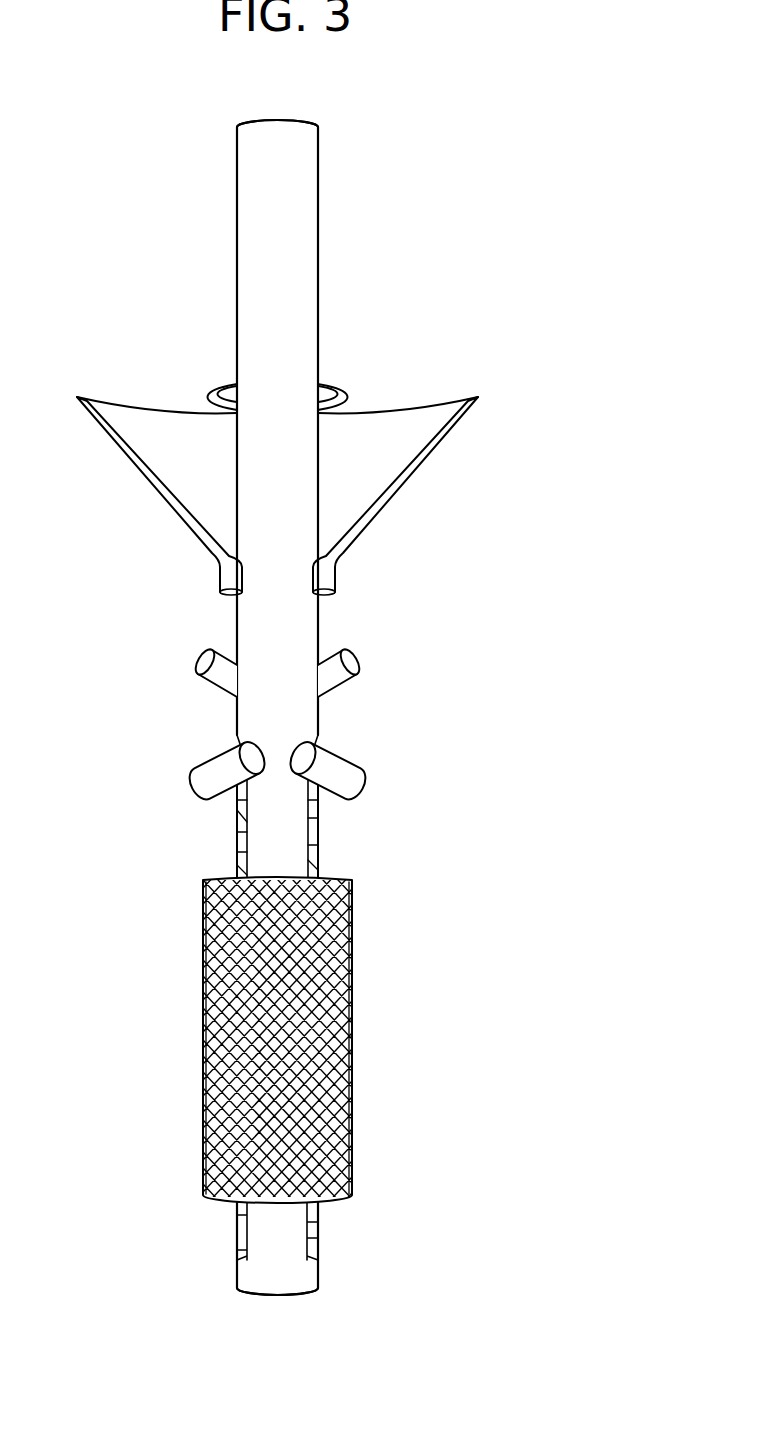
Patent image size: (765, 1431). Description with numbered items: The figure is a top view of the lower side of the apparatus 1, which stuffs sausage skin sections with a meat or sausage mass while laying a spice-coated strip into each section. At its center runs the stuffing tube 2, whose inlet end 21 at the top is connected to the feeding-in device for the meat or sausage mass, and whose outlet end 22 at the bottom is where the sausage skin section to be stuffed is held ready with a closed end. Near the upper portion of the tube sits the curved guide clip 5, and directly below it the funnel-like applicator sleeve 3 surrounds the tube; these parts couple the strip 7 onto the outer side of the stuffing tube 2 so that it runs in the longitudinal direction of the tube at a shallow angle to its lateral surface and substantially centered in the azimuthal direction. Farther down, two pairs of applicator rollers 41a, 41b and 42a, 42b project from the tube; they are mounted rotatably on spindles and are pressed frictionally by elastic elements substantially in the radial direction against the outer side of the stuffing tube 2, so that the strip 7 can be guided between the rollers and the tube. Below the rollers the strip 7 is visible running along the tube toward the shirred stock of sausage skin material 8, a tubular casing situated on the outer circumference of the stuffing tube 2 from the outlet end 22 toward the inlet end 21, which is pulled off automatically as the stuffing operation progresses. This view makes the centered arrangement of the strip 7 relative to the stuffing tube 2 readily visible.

The apparatus 1 is at (507, 462).
The stuffing tube 2 is at (305, 250).
The applicator sleeve 3 is at (92, 472).
The applicator roller 41a is at (196, 660).
The applicator roller 41b is at (354, 658).
The applicator roller 42a is at (197, 782).
The applicator roller 42b is at (355, 775).
The curved guide clip 5 is at (343, 391).
The strip 7 is at (312, 827).
The sausage skin material 8 is at (343, 1040).
The inlet end 21 is at (290, 100).
The outlet end 22 is at (295, 1310).